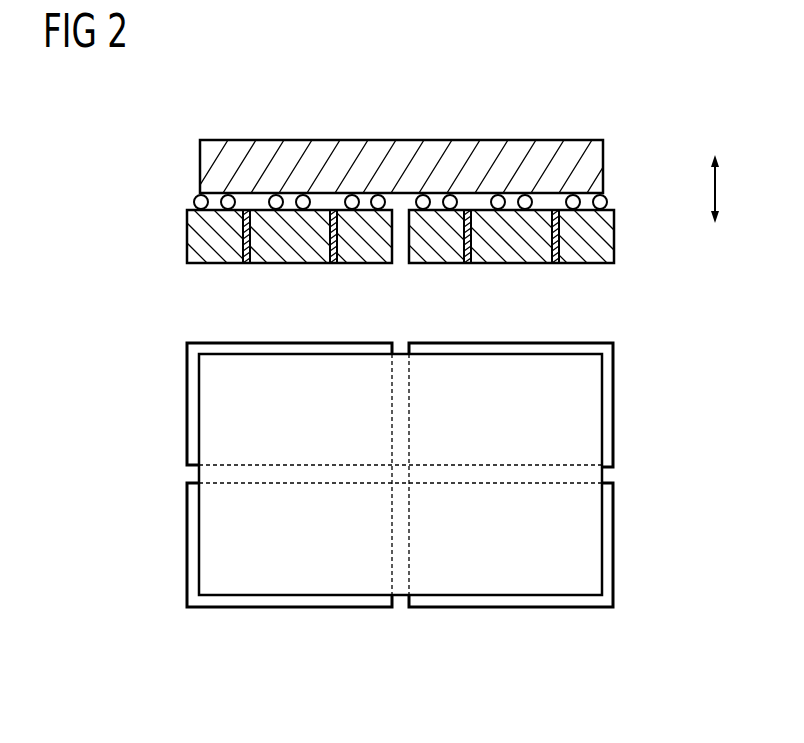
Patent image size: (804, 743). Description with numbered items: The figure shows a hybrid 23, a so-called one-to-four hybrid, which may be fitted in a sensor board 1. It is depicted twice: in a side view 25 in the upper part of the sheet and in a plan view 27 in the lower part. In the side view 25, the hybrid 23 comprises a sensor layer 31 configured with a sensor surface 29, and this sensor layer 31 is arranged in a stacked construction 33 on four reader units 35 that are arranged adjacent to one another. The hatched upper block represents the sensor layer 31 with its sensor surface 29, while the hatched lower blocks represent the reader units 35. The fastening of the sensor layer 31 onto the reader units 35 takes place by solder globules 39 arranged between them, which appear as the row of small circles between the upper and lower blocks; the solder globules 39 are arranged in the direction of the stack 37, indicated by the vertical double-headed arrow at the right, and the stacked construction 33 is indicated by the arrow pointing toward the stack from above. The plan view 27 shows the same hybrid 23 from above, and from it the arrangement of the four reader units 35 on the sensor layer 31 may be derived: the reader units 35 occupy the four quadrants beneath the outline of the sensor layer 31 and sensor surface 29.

The sensor board 1 is at (130, 151).
The hybrid 23 is at (229, 115).
The side view 25 is at (154, 252).
The plan view 27 is at (146, 485).
The sensor surface 29 is at (330, 165).
The sensor layer 31 is at (467, 140).
The stacked construction 33 is at (651, 154).
The reader units 35 is at (606, 236).
The direction of the stack 37 is at (717, 188).
The solder globules 39 is at (194, 202).